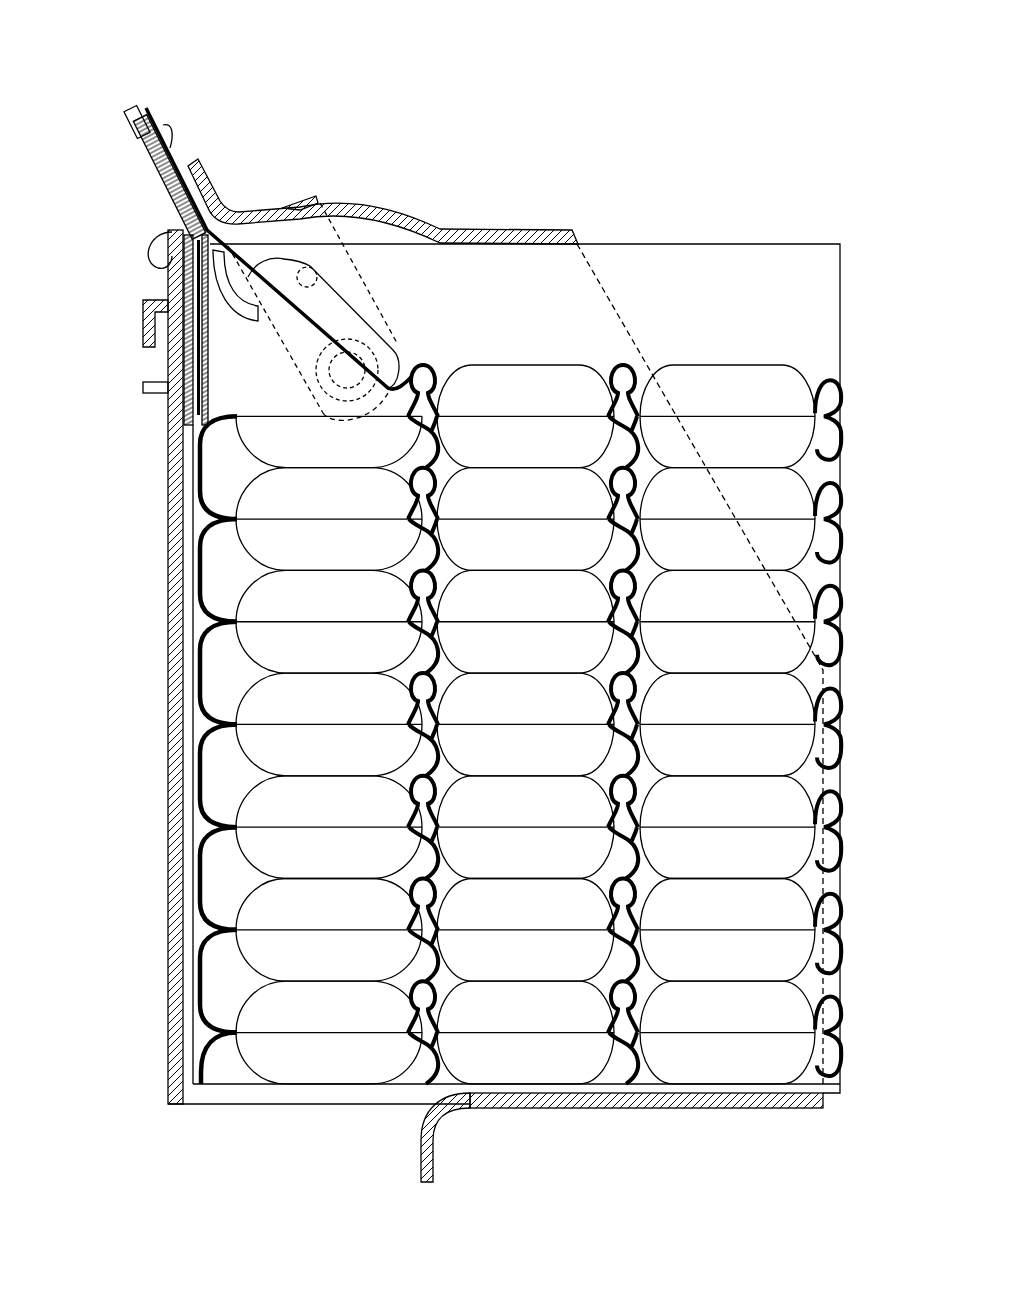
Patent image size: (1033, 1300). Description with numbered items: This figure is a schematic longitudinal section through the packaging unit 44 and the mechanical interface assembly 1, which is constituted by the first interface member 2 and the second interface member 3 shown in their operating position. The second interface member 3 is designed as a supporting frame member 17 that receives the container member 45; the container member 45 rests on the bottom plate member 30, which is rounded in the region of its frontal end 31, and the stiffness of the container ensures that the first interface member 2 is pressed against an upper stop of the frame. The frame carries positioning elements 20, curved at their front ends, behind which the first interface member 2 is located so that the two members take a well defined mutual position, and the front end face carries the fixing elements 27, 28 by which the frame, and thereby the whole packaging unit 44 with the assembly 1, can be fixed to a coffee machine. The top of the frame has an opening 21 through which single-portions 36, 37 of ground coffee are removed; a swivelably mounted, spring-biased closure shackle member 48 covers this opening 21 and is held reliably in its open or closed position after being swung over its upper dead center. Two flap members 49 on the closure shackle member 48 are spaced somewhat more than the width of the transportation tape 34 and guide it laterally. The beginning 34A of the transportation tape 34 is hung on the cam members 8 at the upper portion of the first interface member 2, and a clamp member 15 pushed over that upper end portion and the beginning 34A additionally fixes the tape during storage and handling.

The mechanical interface assembly 1 is at (212, 74).
The first interface member 2 is at (151, 167).
The second interface member 3 is at (143, 268).
The cam members 8 is at (168, 126).
The clamp member 15 is at (138, 108).
The supporting frame member 17 is at (545, 230).
The positioning elements 20 is at (233, 300).
The opening 21 is at (265, 151).
The fixing element 27 is at (143, 312).
The fixing element 28 is at (143, 387).
The bottom plate member 30 is at (590, 1106).
The frontal end 31 is at (420, 1147).
The transportation tape 34 is at (424, 363).
The beginning of the transportation tape 34A is at (177, 157).
The single-portion of ground coffee 36 is at (328, 293).
The single-portion of ground coffee 37 is at (524, 378).
The packaging unit 44 is at (744, 216).
The container member 45 is at (826, 258).
The closure shackle member 48 is at (297, 195).
The flap members 49 is at (157, 240).